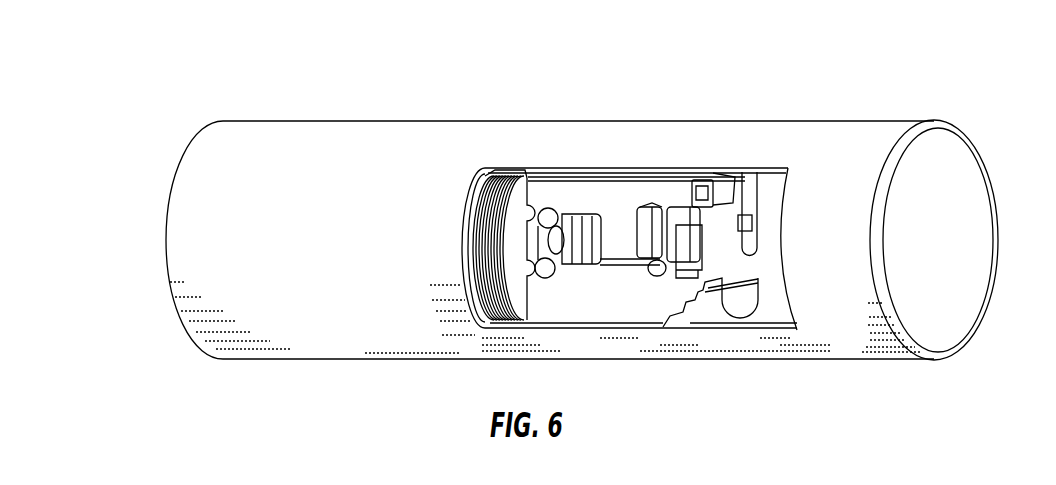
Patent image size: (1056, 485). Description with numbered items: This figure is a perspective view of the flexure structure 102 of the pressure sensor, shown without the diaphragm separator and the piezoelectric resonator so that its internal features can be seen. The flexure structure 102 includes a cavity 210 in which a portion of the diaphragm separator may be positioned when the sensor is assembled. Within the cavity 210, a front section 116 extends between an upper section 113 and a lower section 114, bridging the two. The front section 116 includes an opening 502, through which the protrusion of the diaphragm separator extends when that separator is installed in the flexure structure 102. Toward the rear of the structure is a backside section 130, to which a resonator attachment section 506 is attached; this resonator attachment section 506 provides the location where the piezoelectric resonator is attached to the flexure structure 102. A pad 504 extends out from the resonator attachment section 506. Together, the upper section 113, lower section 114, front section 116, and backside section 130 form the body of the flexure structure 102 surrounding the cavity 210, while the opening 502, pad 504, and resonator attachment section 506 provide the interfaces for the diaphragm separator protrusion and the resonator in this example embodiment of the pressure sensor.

The flexure structure 102 is at (256, 88).
The upper section 113 is at (553, 190).
The lower section 114 is at (628, 312).
The front section 116 is at (525, 238).
The backside section 130 is at (767, 267).
The cavity 210 is at (490, 275).
The opening 502 is at (562, 248).
The pad 504 is at (753, 205).
The resonator attachment section 506 is at (745, 243).